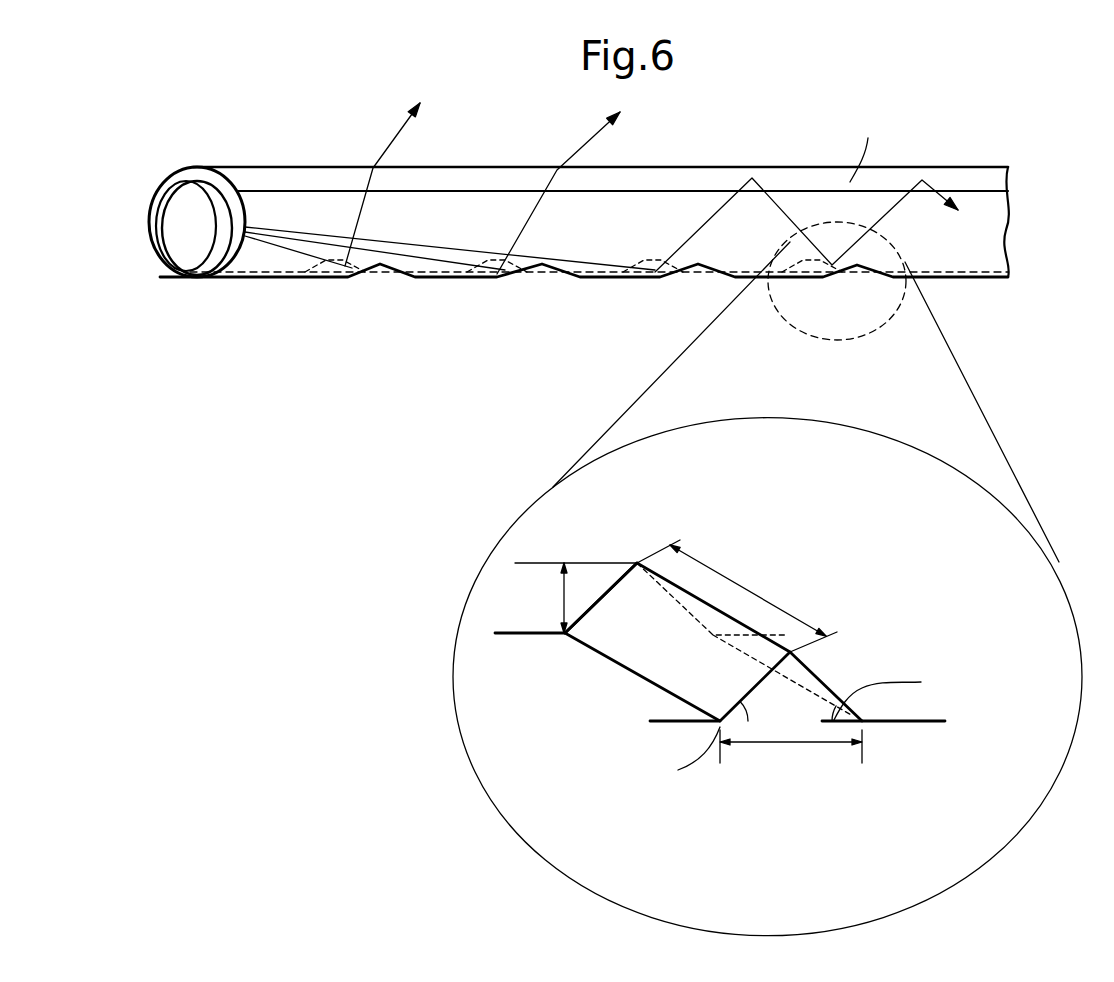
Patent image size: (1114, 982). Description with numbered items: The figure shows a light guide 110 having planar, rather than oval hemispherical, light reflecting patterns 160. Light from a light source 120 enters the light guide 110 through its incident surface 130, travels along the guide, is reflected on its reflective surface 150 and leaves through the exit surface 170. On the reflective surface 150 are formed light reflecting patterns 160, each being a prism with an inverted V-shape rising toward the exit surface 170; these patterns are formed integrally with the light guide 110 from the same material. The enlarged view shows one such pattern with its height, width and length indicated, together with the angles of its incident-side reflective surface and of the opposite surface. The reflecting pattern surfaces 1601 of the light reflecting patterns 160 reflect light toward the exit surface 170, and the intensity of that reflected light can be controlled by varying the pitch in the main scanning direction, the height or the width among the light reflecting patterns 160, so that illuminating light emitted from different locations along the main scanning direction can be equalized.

The light guide 110 is at (692, 160).
The light source 120 is at (178, 223).
The incident surface 130 is at (237, 210).
The reflective surface 150 is at (254, 278).
The light reflecting patterns 160 is at (645, 272).
The reflecting pattern surfaces 1601 is at (650, 633).
The exit surface 170 is at (968, 181).